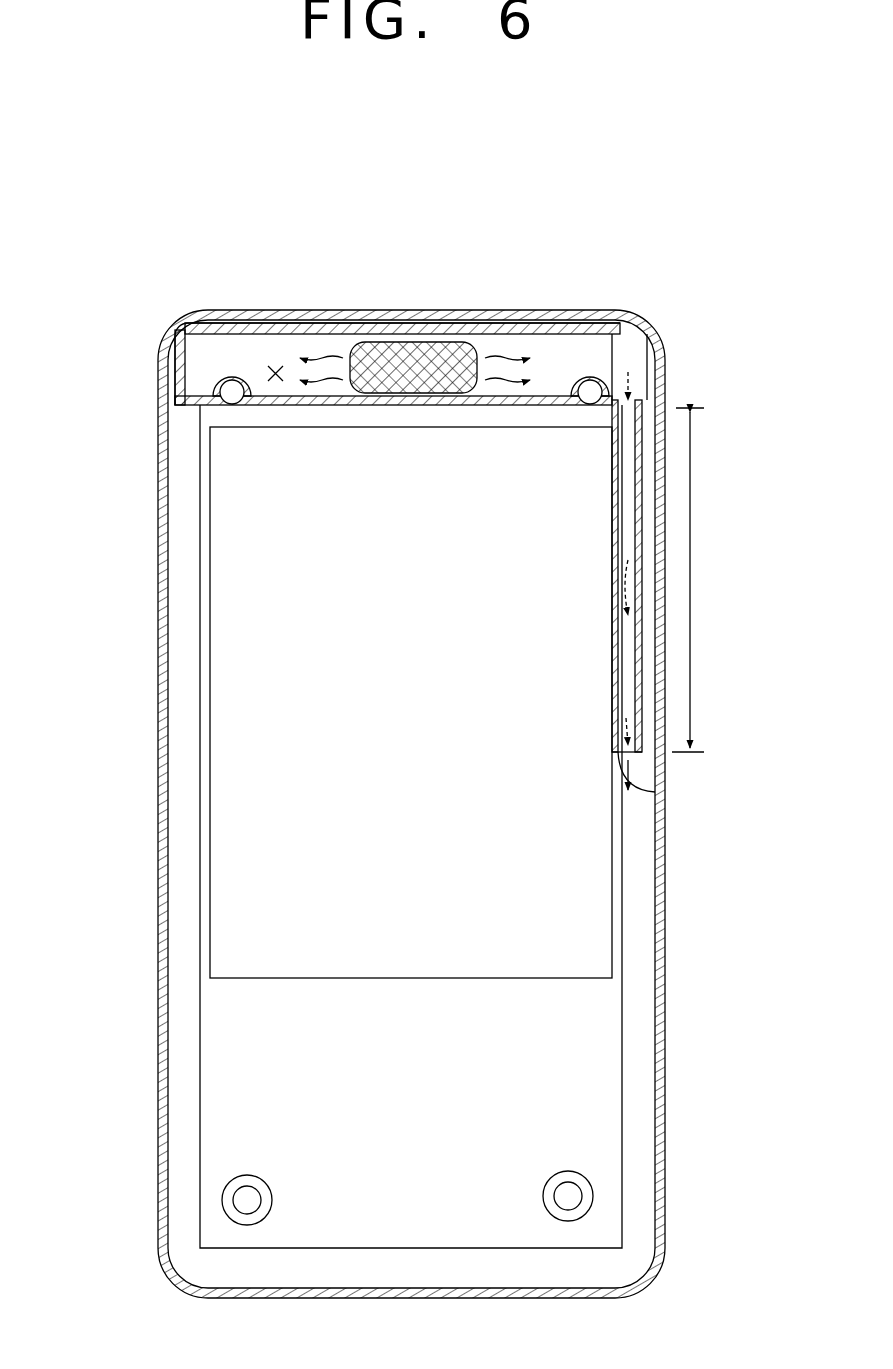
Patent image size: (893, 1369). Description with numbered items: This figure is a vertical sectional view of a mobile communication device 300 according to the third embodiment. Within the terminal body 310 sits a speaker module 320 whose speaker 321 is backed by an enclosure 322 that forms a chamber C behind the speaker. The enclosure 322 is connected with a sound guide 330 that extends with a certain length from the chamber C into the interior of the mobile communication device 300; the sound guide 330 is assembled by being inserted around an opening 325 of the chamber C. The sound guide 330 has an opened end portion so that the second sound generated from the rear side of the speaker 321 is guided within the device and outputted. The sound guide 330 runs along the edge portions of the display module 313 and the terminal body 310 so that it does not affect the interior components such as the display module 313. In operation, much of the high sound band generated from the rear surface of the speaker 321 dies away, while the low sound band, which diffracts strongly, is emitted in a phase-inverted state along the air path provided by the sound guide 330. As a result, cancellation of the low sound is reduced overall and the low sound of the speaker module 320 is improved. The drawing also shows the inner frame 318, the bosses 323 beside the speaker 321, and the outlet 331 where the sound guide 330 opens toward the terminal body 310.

The mobile communication device 300 is at (726, 272).
The terminal body 310 is at (663, 925).
The display module 313 is at (248, 566).
The inner frame 318 is at (600, 1038).
The speaker module 320 is at (395, 300).
The speaker 321 is at (458, 356).
The enclosure 322 is at (165, 375).
The boss 323 is at (230, 372).
The opening 325 is at (652, 380).
The sound guide 330 is at (645, 752).
The sound outlet 331 is at (655, 795).
The chamber C is at (276, 372).